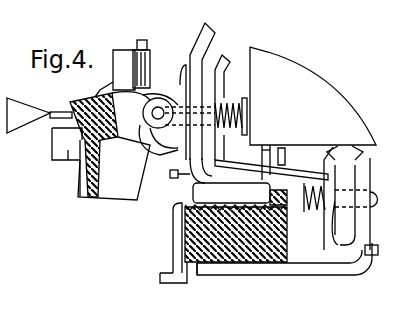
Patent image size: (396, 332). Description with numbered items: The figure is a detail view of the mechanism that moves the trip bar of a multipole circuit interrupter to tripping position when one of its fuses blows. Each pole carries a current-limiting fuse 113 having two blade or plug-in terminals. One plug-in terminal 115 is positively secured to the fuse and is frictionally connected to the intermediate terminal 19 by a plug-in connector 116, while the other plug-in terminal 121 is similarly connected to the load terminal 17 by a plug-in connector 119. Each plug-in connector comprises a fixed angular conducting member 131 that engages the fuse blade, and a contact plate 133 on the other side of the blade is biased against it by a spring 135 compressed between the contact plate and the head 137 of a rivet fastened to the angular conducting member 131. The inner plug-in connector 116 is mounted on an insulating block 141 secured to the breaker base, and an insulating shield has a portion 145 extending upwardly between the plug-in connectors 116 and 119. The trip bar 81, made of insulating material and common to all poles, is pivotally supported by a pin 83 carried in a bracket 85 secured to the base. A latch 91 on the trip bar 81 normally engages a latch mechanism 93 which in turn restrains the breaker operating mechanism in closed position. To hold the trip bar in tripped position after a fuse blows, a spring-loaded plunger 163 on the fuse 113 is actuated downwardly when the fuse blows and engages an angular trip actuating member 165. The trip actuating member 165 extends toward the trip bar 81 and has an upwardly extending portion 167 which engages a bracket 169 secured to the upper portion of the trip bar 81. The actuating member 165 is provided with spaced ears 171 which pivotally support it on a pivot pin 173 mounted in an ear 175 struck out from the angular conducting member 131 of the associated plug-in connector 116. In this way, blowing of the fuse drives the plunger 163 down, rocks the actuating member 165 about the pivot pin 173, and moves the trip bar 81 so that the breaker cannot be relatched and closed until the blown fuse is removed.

The latch mechanism 93 is at (25, 110).
The latch 91 is at (58, 111).
The pin 83 is at (67, 144).
The bracket 85 is at (72, 158).
The trip bar 81 is at (114, 72).
The upwardly extending portion 167 is at (137, 42).
The bracket 169 is at (149, 52).
The angular conducting member 131 is at (178, 64).
The ear 175 is at (160, 101).
The pivot pin 173 is at (158, 140).
The spaced ears 171 is at (114, 146).
The plug-in terminal 115 is at (208, 32).
The contact plate 133 is at (232, 56).
The spring 135 is at (228, 102).
The head 137 is at (247, 103).
The current-limiting fuse 113 is at (317, 86).
The portion 145 is at (286, 146).
The plug-in terminal 121 is at (338, 147).
The plug-in connector 119 is at (309, 164).
The spring-loaded plunger 163 is at (262, 150).
The trip actuating member 165 is at (245, 166).
The plug-in connector 116 is at (167, 203).
The terminal 19 is at (178, 232).
The insulating block 141 is at (250, 265).
The load terminal 17 is at (309, 266).